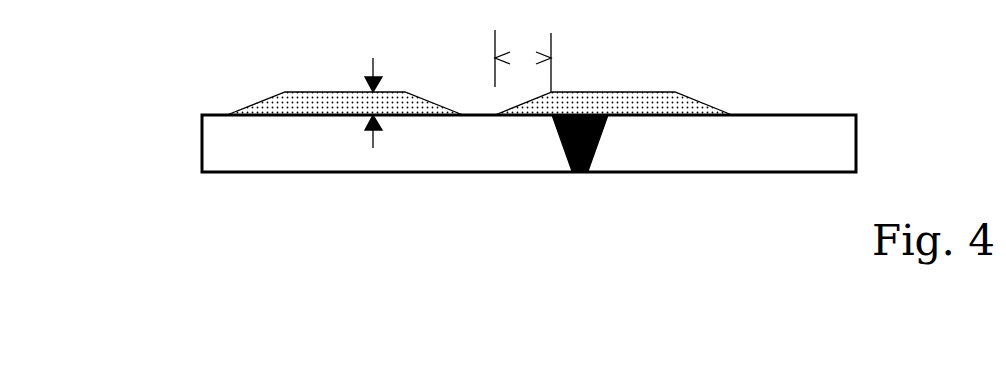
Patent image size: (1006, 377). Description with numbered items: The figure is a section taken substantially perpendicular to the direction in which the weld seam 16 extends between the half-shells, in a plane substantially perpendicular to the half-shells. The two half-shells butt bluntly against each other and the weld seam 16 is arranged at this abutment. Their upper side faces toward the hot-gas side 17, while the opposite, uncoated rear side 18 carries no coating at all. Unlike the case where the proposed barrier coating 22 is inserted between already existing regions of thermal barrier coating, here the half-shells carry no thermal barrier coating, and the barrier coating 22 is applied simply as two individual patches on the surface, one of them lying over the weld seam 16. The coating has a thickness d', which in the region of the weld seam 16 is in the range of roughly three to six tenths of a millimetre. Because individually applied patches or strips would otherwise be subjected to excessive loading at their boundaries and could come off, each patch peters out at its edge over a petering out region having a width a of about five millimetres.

The rear side 18 is at (529, 188).
The weld seam 16 is at (568, 156).
The hot-gas side 17 is at (323, 63).
The barrier coating 22 is at (640, 98).
The reduced thickness d' is at (391, 88).
The width of petering out region a is at (523, 52).